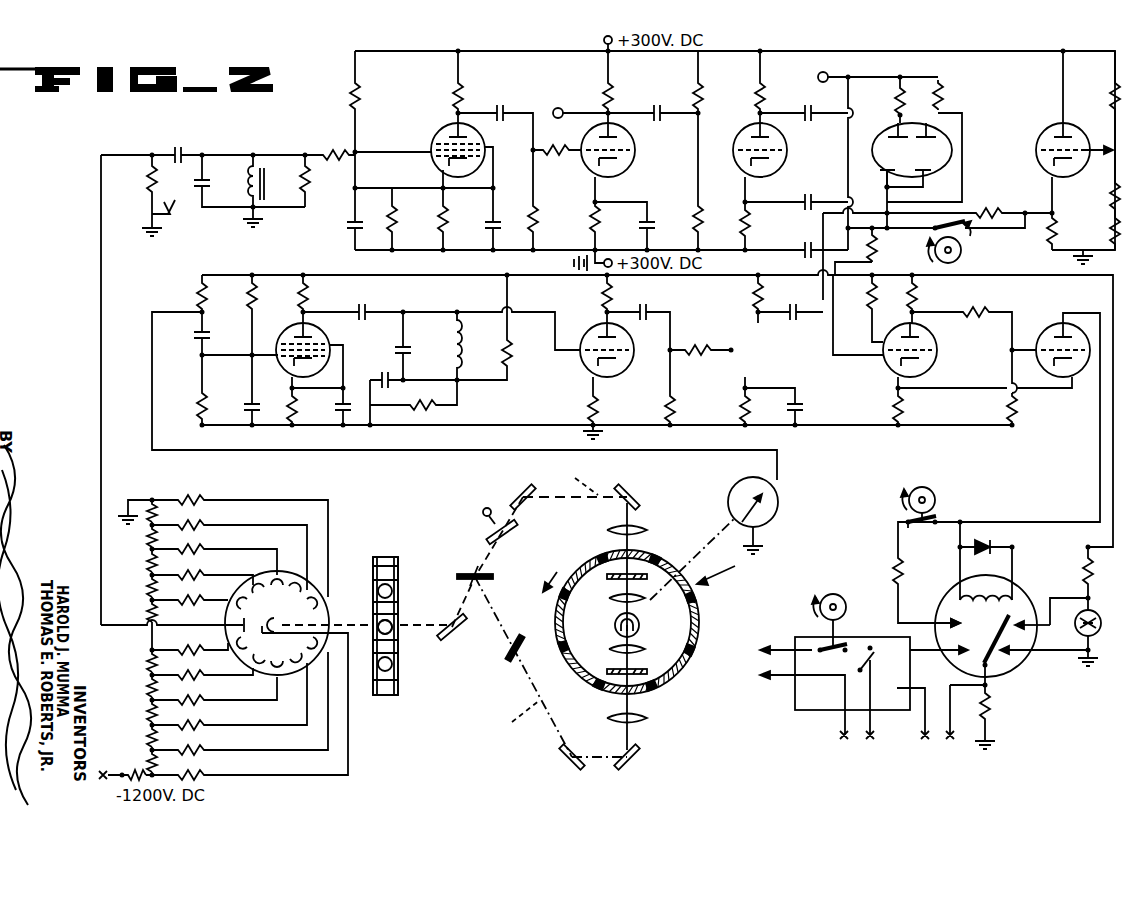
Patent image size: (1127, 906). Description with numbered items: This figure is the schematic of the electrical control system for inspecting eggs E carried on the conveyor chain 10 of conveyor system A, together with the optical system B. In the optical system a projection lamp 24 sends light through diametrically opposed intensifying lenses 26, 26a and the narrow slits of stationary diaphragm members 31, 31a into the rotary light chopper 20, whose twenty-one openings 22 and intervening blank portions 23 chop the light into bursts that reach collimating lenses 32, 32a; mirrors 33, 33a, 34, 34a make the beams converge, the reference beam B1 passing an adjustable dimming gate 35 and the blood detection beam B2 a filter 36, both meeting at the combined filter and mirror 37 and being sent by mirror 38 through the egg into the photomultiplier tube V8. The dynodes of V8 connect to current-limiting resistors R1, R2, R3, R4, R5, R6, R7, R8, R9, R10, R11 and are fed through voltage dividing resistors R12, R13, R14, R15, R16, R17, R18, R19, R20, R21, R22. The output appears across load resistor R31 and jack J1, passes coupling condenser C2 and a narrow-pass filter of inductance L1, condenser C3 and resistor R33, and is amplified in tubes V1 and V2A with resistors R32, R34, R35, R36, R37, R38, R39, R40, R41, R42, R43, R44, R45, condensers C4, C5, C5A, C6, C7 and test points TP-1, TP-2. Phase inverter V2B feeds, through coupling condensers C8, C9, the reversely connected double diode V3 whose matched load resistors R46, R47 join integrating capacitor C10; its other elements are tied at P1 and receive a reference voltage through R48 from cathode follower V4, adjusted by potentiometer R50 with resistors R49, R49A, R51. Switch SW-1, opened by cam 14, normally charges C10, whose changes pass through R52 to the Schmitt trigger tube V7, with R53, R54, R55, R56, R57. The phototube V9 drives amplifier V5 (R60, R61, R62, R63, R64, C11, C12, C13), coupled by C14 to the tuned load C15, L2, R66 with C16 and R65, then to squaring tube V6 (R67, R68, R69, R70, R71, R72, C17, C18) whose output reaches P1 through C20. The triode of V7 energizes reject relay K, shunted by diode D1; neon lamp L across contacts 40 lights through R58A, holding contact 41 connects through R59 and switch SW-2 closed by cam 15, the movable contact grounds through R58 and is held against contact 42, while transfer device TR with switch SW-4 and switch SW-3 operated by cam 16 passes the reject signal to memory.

The coupling condenser C2 is at (172, 150).
The load resistor R31 is at (150, 180).
The jack J1 is at (150, 212).
The condenser C3 is at (204, 183).
The inductance L1 is at (250, 190).
The resistor R33 is at (308, 190).
The resistor R32 is at (328, 152).
The condenser C4 is at (350, 226).
The resistor R37 is at (357, 92).
The amplifier tube V1 is at (436, 138).
The resistor R38 is at (460, 92).
The condenser C6 is at (494, 110).
The resistor R34 is at (390, 212).
The resistor R35 is at (455, 212).
The condenser C5 is at (488, 232).
The test point TP-1 is at (562, 108).
The resistor R39 is at (556, 156).
The resistor R36 is at (535, 210).
The resistor R40 is at (592, 226).
The condenser C5A is at (645, 220).
The amplifier section V2A is at (636, 136).
The phase inverter tube V2B is at (733, 160).
The resistor R43 is at (610, 92).
The condenser C7 is at (650, 110).
The resistor R44 is at (700, 92).
The resistor R41 is at (695, 214).
The resistor R45 is at (762, 92).
The coupling condenser C8 is at (818, 118).
The resistor R42 is at (742, 216).
The coupling condenser C9 is at (796, 198).
The integrating capacitor C10 is at (803, 244).
The test point TP-2 is at (828, 76).
The load resistor R46 is at (897, 98).
The load resistor R47 is at (942, 92).
The double diode V3 is at (945, 135).
The common connection point P1 is at (884, 189).
The resistor R48 is at (978, 210).
The switch SW-1 is at (968, 234).
The cam 14 is at (960, 258).
The resistor R52 is at (876, 240).
The resistor R51 is at (1048, 242).
The cathode follower tube V4 is at (1050, 136).
The resistor R49 is at (1112, 96).
The potentiometer R50 is at (1112, 188).
The resistor R49A is at (1112, 226).
The resistor R61 is at (198, 298).
The resistor R63 is at (250, 300).
The resistor R64 is at (300, 298).
The condenser C11 is at (200, 340).
The condenser C12 is at (248, 404).
The resistor R60 is at (200, 412).
The amplifier tube V5 is at (330, 342).
The resistor R62 is at (297, 412).
The condenser C13 is at (340, 407).
The condenser C14 is at (366, 310).
The condenser C15 is at (399, 352).
The inductance L2 is at (452, 352).
The condenser C16 is at (392, 384).
The resistor R65 is at (433, 408).
The resistance R66 is at (511, 356).
The resistor R67 is at (603, 294).
The condenser C17 is at (650, 300).
The double triode V6 is at (634, 338).
The resistor R69 is at (700, 357).
The resistor R68 is at (590, 408).
The resistor R70 is at (667, 410).
The resistor R71 is at (742, 410).
The resistor R72 is at (754, 294).
The condenser C20 is at (805, 300).
The condenser C18 is at (800, 403).
The resistor R53 is at (870, 300).
The resistor R54 is at (915, 300).
The resistor R55 is at (975, 306).
The dual tube V7 is at (1036, 343).
The resistor R57 is at (903, 412).
The resistor R56 is at (1017, 412).
The phototube V9 is at (776, 494).
The current-limiting resistor R1 is at (203, 498).
The current-limiting resistor R2 is at (203, 523).
The current-limiting resistor R3 is at (203, 547).
The current-limiting resistor R4 is at (203, 573).
The current-limiting resistor R5 is at (195, 598).
The current-limiting resistor R6 is at (185, 648).
The current-limiting resistor R7 is at (195, 673).
The current-limiting resistor R8 is at (203, 698).
The current-limiting resistor R9 is at (203, 723).
The current-limiting resistor R10 is at (203, 748).
The current-limiting resistor R11 is at (203, 773).
The voltage dividing resistor R12 is at (150, 508).
The voltage dividing resistor R13 is at (150, 536).
The voltage dividing resistor R14 is at (150, 562).
The voltage dividing resistor R15 is at (150, 587).
The voltage dividing resistor R16 is at (150, 612).
The voltage dividing resistor R17 is at (150, 662).
The voltage dividing resistor R18 is at (150, 687).
The voltage dividing resistor R19 is at (150, 712).
The voltage dividing resistor R20 is at (150, 737).
The voltage dividing resistor R21 is at (150, 762).
The voltage dividing resistor R22 is at (136, 775).
The photomultiplier tube V8 is at (322, 598).
The conveyor system A is at (395, 557).
The eggs E is at (399, 616).
The conveyor chain 10 is at (398, 678).
The light chopper 20 is at (710, 601).
The openings 22 is at (590, 574).
The blank portions 23 is at (680, 675).
The stationary diaphragm member 31 is at (613, 578).
The intensifying lens 26 is at (612, 599).
The projection lamp 24 is at (640, 621).
The intensifying lens 26a is at (644, 650).
The stationary diaphragm member 31a is at (642, 671).
The collimating lens 32 is at (640, 527).
The collimating lens 32a is at (648, 718).
The mirror 33 is at (634, 488).
The mirror 33a is at (640, 767).
The mirror 34 is at (517, 489).
The mirror 34a is at (562, 767).
The adjustable dimming gate 35 is at (512, 532).
The filter 36 is at (512, 660).
The combined filter and mirror 37 is at (473, 572).
The mirror 38 is at (456, 638).
The reference beam B1 is at (575, 477).
The blood detection beam B2 is at (509, 718).
The optical system B is at (723, 571).
The transfer device TR is at (815, 716).
The switch SW-3 is at (843, 645).
The cam 16 is at (846, 603).
The switch SW-4 is at (858, 668).
The cam 15 is at (938, 493).
The switch SW-2 is at (938, 520).
The resistor R59 is at (900, 565).
The diode D1 is at (990, 542).
The resistor R58A is at (1085, 568).
The neon lamp L is at (1094, 612).
The reject relay K is at (1024, 672).
The holding contact 41 is at (947, 618).
The right-hand set of contacts 40 is at (1022, 634).
The lower left contact 42 is at (958, 654).
The resistor R58 is at (990, 718).